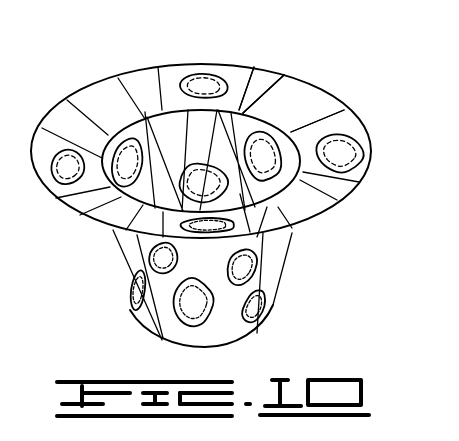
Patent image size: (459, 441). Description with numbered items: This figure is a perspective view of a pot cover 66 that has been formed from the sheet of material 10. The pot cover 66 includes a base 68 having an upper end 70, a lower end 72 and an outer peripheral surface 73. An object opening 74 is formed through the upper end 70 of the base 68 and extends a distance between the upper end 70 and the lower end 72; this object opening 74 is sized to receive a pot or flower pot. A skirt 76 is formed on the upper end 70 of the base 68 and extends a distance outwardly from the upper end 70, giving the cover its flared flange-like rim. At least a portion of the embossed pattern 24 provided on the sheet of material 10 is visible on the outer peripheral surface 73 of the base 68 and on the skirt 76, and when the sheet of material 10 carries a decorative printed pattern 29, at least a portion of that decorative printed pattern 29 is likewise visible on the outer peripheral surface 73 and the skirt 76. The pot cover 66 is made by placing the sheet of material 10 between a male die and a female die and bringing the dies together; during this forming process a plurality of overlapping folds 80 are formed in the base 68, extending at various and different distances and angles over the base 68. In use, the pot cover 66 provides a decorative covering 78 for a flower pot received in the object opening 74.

The sheet of material 10 is at (362, 108).
The embossed pattern 24 is at (349, 138).
The decorative printed pattern 29 is at (207, 73).
The pot cover 66 is at (113, 37).
The base 68 is at (282, 287).
The upper end 70 is at (307, 97).
The lower end 72 is at (249, 339).
The outer peripheral surface 73 is at (128, 250).
The object opening 74 is at (167, 138).
The skirt 76 is at (264, 80).
The decorative covering 78 is at (450, 180).
The overlapping folds 80 is at (178, 272).